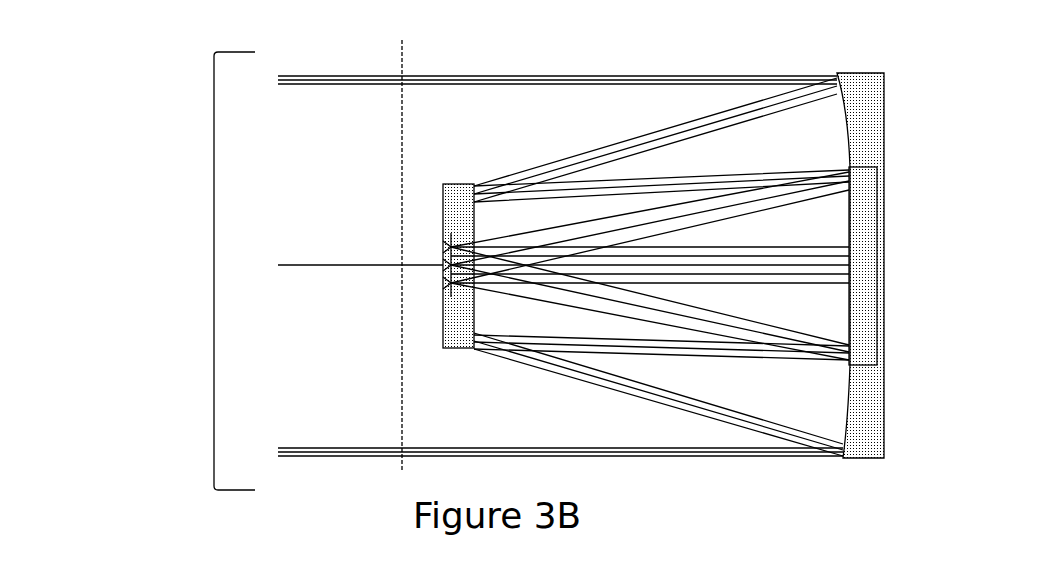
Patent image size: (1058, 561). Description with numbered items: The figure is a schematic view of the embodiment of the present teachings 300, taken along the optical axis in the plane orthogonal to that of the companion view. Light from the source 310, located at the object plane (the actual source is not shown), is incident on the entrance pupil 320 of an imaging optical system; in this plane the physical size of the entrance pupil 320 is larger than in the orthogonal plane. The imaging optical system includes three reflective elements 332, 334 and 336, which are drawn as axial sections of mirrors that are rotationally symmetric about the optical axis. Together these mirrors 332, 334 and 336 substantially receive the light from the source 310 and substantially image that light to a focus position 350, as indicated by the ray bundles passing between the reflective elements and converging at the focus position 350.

The embodiment of the present teachings 300 is at (124, 72).
The source 310 is at (214, 268).
The entrance pupil 320 is at (402, 70).
The reflective element 332 is at (884, 103).
The reflective element 334 is at (443, 213).
The reflective element 336 is at (884, 303).
The focus position 350 is at (443, 285).